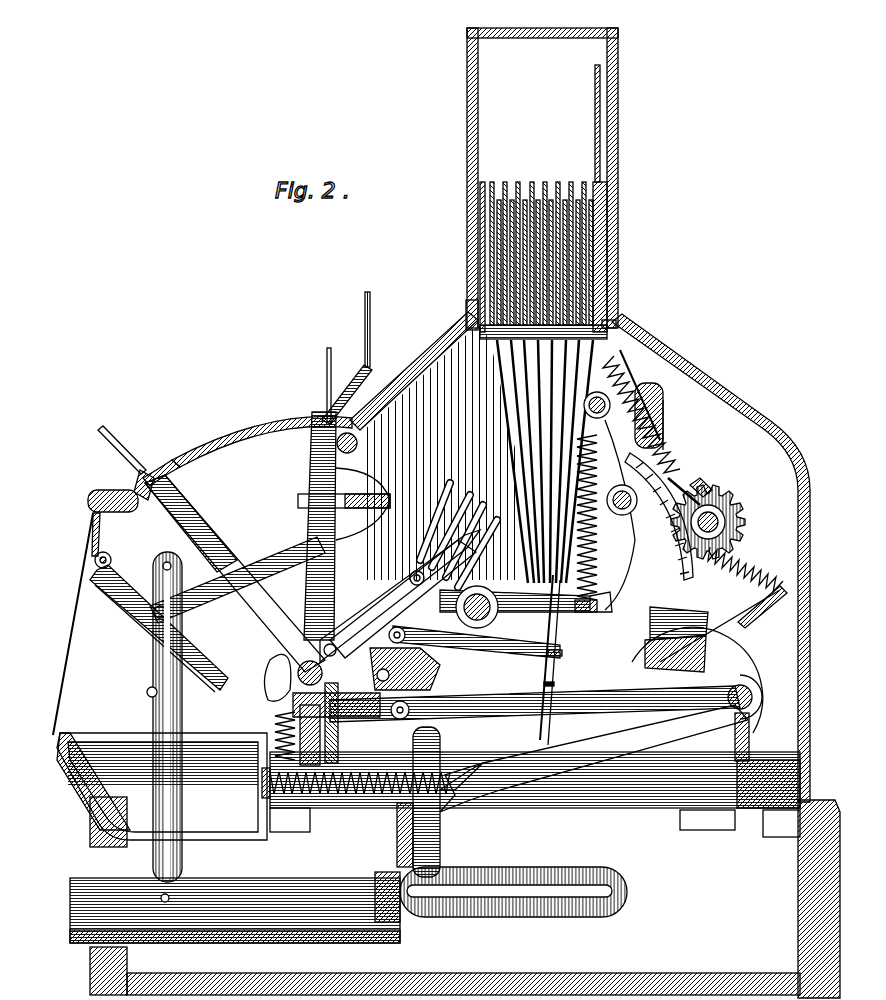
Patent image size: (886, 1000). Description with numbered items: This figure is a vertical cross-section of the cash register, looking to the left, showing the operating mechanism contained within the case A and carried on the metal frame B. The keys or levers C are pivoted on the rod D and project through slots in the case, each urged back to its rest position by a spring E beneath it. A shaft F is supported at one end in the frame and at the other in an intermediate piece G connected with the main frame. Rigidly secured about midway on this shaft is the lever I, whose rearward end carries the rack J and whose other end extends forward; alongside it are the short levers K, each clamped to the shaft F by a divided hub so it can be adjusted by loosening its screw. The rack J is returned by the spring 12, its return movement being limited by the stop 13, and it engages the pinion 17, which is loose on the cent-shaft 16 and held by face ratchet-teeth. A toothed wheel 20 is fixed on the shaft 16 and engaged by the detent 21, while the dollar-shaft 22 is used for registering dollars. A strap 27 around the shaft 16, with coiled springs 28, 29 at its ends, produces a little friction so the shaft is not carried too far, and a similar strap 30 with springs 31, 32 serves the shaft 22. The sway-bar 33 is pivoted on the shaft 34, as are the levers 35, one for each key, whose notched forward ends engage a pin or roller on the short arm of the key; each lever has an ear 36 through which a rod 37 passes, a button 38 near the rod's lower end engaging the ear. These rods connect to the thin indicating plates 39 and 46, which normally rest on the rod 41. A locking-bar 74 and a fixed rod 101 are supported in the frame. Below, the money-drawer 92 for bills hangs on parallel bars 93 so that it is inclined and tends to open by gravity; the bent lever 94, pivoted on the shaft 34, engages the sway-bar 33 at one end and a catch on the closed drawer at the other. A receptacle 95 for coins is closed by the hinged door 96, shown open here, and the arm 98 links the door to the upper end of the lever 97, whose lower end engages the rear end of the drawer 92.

The case A is at (560, 24).
The metal frame B is at (470, 312).
The keys or levers C is at (300, 588).
The rod D is at (312, 662).
The spring E is at (272, 722).
The shaft F is at (477, 592).
The intermediate piece G is at (477, 453).
The lever I is at (466, 596).
The rack J is at (659, 516).
The short levers K is at (465, 648).
The spring 12 is at (600, 540).
The stop 13 is at (665, 418).
The shaft 16 is at (725, 522).
The pinion 17 is at (745, 510).
The toothed wheel 20 is at (725, 485).
The detent 21 is at (655, 425).
The shaft 22 is at (622, 508).
The strap 27 is at (700, 480).
The coiled spring 28 is at (672, 470).
The coiled spring 29 is at (760, 575).
The strap 30 is at (605, 441).
The spring 31 is at (625, 378).
The spring 32 is at (745, 605).
The sway-bar 33 is at (650, 640).
The shaft 34 is at (752, 694).
The levers 35 is at (605, 665).
The ear 36 is at (545, 697).
The rods 37 is at (469, 535).
The button 38 is at (555, 655).
The thin metal plates 39 is at (540, 255).
The rod 41 is at (615, 330).
The thin metal plates 46 is at (545, 265).
The locking-bar 74 is at (370, 500).
The money-drawer 92 is at (348, 905).
The parallel bars 93 is at (176, 705).
The bent lever 94 is at (610, 738).
The receptacle 95 is at (162, 786).
The hinged door 96 is at (200, 660).
The lever 97 is at (440, 838).
The arm 98 is at (265, 565).
The fixed rod 101 is at (655, 392).